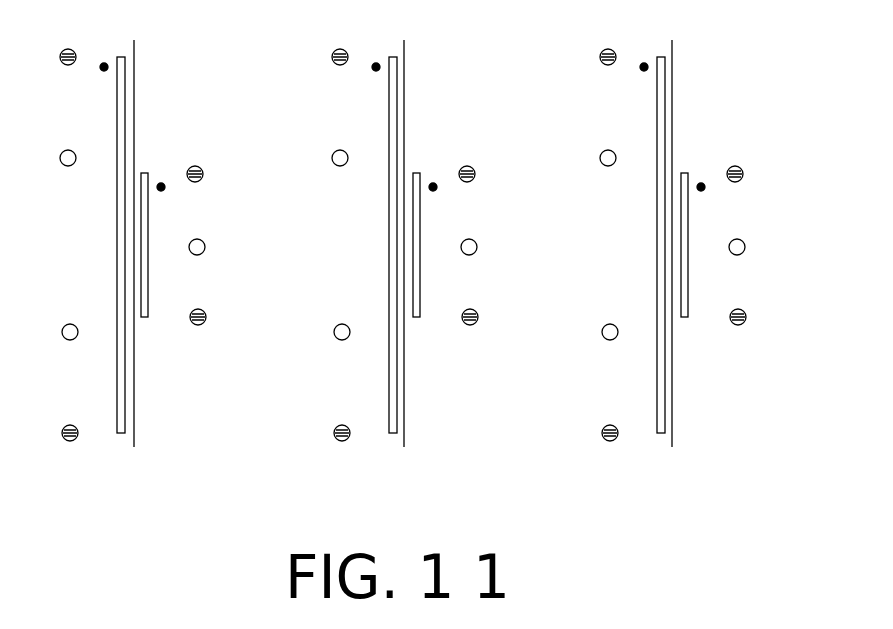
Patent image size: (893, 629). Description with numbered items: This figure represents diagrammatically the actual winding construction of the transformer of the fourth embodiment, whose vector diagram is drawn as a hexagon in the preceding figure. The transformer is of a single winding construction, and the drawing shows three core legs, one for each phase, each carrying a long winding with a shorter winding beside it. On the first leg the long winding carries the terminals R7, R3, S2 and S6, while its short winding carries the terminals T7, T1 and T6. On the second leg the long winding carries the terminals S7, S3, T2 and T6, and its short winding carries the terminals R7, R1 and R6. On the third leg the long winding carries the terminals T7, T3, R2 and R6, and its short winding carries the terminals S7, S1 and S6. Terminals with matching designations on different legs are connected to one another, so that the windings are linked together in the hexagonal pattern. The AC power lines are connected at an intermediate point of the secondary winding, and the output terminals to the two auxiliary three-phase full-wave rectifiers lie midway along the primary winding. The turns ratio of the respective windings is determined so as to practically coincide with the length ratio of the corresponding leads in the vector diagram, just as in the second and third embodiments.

The R-phase winding terminal 7 R7 is at (117, 57).
The R-phase winding terminal 3 R3 is at (125, 158).
The S-phase winding terminal 2 S2 is at (125, 332).
The S-phase winding terminal 6 S6 is at (117, 433).
The T-phase winding terminal 7 T7 is at (148, 174).
The T-phase winding terminal 1 T1 is at (148, 247).
The T-phase winding terminal 6 T6 is at (148, 317).
The S-phase winding terminal 7 S7 is at (389, 57).
The S-phase winding terminal 3 S3 is at (397, 158).
The T-phase winding terminal 2 T2 is at (397, 332).
The R-phase winding terminal 1 R1 is at (420, 247).
The R-phase winding terminal 6 R6 is at (420, 317).
The T-phase winding terminal 3 T3 is at (665, 158).
The R-phase winding terminal 2 R2 is at (665, 332).
The S-phase winding terminal 1 S1 is at (688, 247).